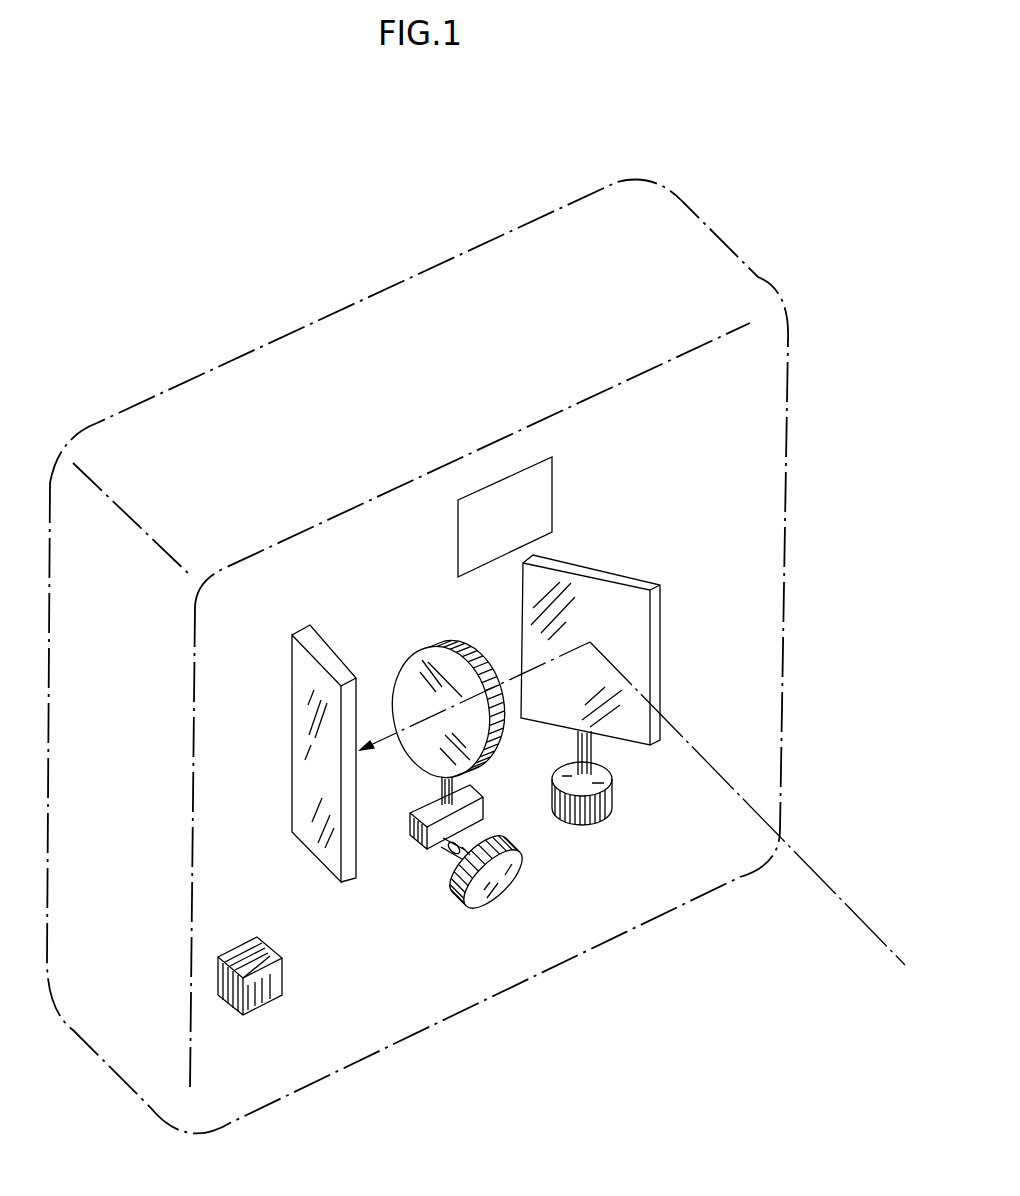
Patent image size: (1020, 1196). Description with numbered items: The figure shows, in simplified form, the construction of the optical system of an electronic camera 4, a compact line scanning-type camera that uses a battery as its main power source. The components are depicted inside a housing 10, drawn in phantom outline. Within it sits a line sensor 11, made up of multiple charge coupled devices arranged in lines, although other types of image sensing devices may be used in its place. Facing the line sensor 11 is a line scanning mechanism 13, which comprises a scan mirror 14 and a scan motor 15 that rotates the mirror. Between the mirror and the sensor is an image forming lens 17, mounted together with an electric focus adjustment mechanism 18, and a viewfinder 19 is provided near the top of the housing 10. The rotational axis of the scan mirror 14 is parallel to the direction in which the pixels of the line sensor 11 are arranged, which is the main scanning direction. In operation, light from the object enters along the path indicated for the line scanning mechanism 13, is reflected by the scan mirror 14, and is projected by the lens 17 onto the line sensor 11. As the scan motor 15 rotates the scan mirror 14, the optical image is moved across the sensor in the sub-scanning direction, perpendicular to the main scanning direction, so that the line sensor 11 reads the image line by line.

The electronic camera 4 is at (226, 285).
The housing 10 is at (488, 238).
The line sensor 11 is at (303, 753).
The line scanning mechanism 13 is at (667, 703).
The scan mirror 14 is at (662, 622).
The scan motor 15 is at (613, 805).
The image forming lens 17 is at (433, 640).
The electric focus adjustment mechanism 18 is at (433, 855).
The viewfinder 19 is at (555, 485).